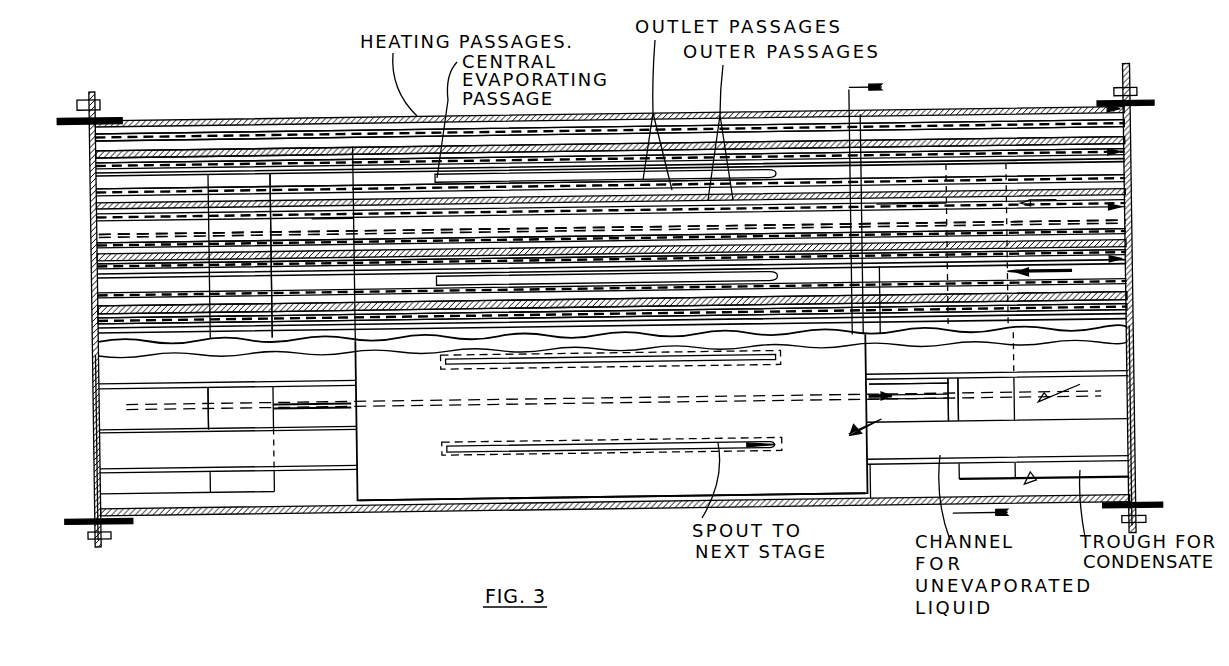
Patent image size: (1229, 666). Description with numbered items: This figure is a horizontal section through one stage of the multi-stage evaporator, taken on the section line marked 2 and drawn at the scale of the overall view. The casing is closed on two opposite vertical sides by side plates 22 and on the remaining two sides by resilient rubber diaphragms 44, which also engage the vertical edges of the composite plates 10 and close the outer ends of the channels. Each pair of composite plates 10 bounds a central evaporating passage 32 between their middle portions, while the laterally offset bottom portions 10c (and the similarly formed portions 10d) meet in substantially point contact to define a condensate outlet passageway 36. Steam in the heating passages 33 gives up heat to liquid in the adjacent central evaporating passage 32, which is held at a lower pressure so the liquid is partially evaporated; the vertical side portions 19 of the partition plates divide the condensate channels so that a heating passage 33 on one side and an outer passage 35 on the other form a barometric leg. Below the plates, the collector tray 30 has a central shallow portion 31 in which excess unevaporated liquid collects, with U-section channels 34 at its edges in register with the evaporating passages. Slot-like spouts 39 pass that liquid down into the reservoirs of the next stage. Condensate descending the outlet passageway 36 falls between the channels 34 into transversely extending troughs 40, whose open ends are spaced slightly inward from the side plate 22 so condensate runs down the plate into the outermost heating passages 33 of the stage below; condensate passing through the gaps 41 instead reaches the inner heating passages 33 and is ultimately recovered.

The section line 2 is at (928, 306).
The composite plate 10 is at (93, 333).
The bottom portion 10c is at (110, 238).
The evaporator plate 10d is at (172, 168).
The side portion 19 is at (242, 190).
The side plate 22 is at (278, 122).
The collector tray 30 is at (396, 512).
The central shallow portion 31 is at (551, 484).
The central evaporating passage 32 is at (437, 176).
The heating passage 33 is at (1135, 143).
The U-section channel 34 is at (103, 178).
The outer passage 35 is at (1135, 123).
The condensate outlet passageway 36 is at (1012, 116).
The spout 39 is at (778, 140).
The trough 40 is at (950, 215).
The gap 41 is at (313, 222).
The diaphragm 44 is at (95, 433).